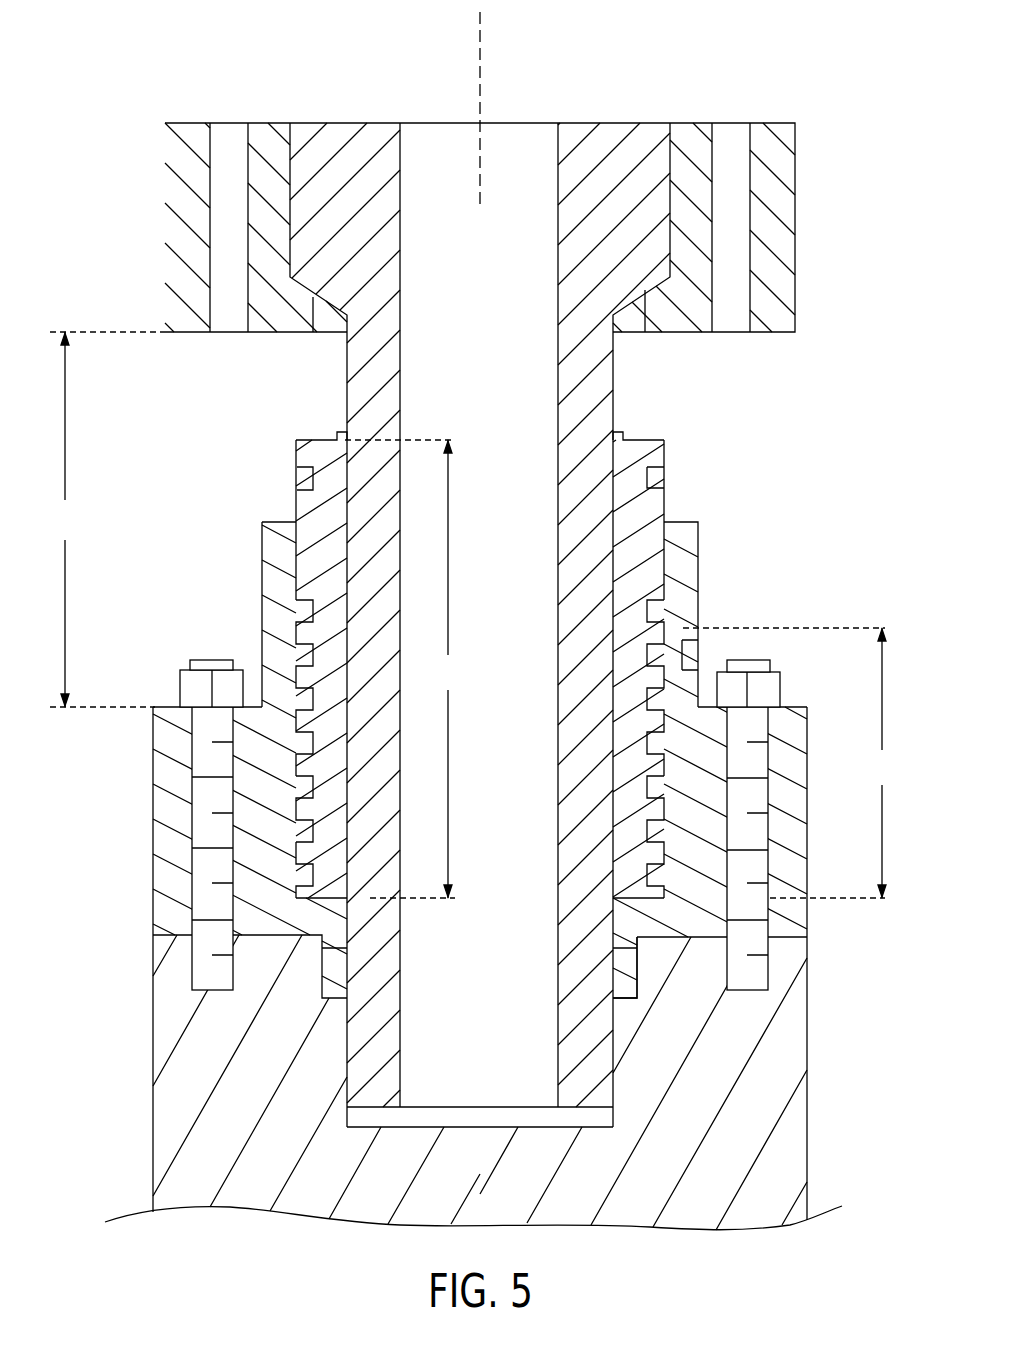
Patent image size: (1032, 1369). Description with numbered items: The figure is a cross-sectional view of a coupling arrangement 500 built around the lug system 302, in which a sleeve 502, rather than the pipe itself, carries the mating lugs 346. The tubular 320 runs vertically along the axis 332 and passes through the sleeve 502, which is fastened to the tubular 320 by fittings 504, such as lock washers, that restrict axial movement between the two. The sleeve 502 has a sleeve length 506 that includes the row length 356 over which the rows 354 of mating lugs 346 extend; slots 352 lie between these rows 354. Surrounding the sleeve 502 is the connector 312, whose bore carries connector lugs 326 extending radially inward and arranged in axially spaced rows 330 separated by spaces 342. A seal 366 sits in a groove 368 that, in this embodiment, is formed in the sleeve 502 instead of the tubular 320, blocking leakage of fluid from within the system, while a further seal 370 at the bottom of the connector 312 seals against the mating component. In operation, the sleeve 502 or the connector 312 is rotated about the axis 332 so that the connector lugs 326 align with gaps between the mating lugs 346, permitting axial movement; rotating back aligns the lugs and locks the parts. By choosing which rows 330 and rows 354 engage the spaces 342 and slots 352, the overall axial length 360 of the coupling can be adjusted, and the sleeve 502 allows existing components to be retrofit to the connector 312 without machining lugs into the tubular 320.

The coupling arrangement 500 is at (690, 72).
The axis 332 is at (480, 62).
The tubular 320 is at (585, 367).
The fittings 504 is at (625, 438).
The lug system 302 is at (697, 465).
The sleeve 502 is at (327, 475).
The seal 366 is at (298, 603).
The groove 368 is at (668, 602).
The mating lugs 346 is at (305, 660).
The rows of mating lugs 354 is at (672, 733).
The connector 312 is at (790, 768).
The slots 352 is at (668, 855).
The rows of connector lugs 330 is at (287, 777).
The connector lugs 326 is at (307, 832).
The spaces 342 is at (300, 873).
The seal 370 is at (620, 997).
The overall axial length 360 is at (105, 519).
The sleeve length 506 is at (405, 669).
The row length 356 is at (791, 763).